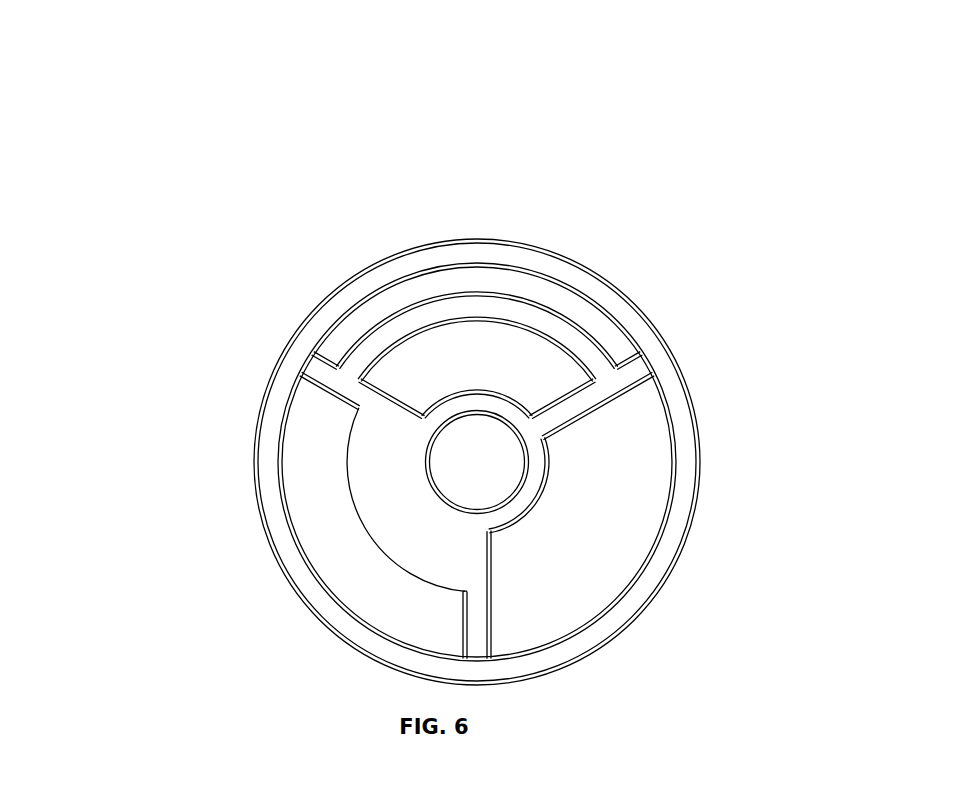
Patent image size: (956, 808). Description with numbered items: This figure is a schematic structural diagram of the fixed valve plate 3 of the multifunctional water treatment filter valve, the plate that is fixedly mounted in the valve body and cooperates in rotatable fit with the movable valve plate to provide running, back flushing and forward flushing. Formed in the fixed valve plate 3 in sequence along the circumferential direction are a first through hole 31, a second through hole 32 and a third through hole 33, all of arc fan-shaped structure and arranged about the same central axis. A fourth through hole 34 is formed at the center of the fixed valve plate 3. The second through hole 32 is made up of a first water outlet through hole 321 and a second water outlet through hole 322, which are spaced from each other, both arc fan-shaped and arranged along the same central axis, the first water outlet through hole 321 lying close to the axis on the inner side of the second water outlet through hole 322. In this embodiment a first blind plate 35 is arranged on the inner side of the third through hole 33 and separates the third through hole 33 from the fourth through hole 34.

The fixed valve plate 3 is at (565, 255).
The first through hole 31 is at (583, 475).
The second through hole 32 is at (478, 265).
The first water outlet through hole 321 is at (413, 387).
The second water outlet through hole 322 is at (580, 318).
The third through hole 33 is at (322, 420).
The fourth through hole 34 is at (466, 490).
The first blind plate 35 is at (415, 503).